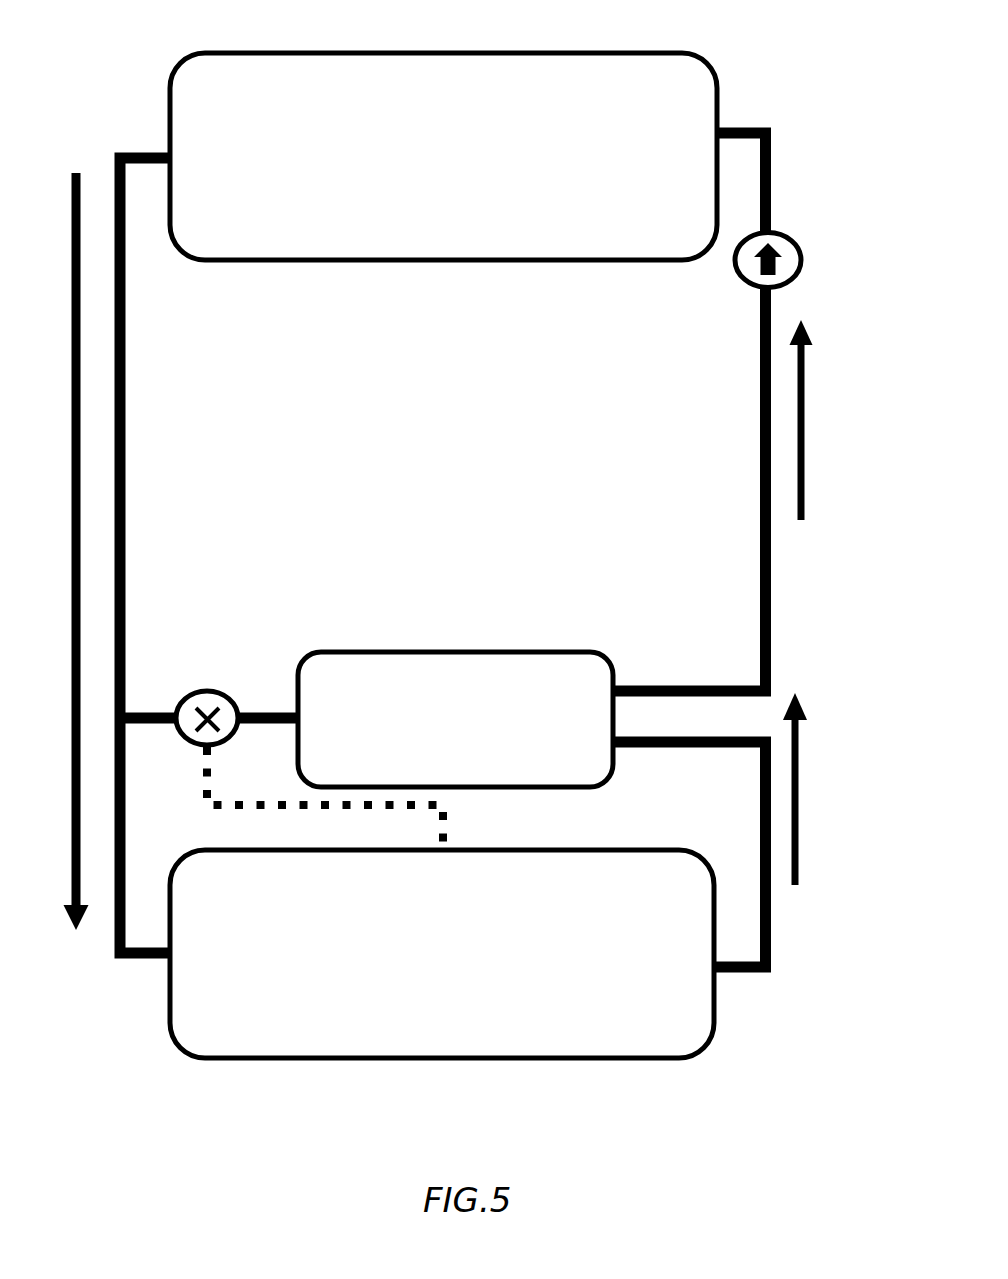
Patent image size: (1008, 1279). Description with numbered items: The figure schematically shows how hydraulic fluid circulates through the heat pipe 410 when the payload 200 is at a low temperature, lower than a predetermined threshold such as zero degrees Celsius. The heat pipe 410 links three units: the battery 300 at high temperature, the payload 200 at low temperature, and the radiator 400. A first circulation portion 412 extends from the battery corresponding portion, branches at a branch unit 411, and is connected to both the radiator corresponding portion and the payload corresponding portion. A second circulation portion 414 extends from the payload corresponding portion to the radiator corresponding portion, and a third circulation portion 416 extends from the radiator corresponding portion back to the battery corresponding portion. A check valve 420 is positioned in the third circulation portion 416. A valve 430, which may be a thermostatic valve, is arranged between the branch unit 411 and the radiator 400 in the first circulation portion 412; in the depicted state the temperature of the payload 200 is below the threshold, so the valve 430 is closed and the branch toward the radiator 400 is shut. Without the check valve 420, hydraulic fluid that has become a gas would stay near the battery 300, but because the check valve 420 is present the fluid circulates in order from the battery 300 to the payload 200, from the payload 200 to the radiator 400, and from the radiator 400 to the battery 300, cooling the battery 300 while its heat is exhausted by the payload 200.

The payload 200 is at (640, 1060).
The battery 300 is at (643, 51).
The radiator 400 is at (555, 788).
The heat pipe 410 is at (448, 539).
The branch unit 411 is at (128, 710).
The first circulation portion 412 is at (127, 333).
The second circulation portion 414 is at (771, 937).
The third circulation portion 416 is at (771, 605).
The check valve 420 is at (802, 251).
The valve 430 is at (209, 692).